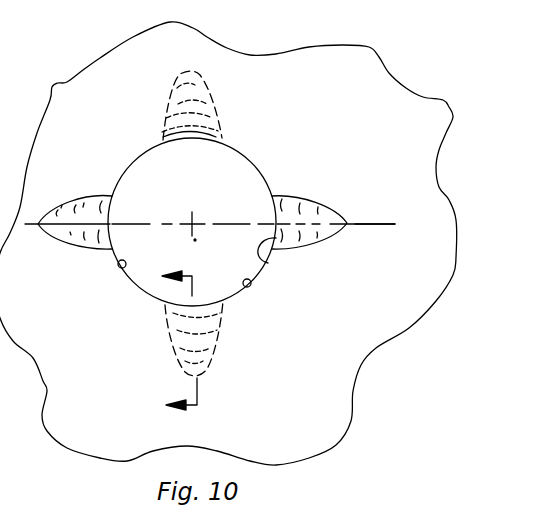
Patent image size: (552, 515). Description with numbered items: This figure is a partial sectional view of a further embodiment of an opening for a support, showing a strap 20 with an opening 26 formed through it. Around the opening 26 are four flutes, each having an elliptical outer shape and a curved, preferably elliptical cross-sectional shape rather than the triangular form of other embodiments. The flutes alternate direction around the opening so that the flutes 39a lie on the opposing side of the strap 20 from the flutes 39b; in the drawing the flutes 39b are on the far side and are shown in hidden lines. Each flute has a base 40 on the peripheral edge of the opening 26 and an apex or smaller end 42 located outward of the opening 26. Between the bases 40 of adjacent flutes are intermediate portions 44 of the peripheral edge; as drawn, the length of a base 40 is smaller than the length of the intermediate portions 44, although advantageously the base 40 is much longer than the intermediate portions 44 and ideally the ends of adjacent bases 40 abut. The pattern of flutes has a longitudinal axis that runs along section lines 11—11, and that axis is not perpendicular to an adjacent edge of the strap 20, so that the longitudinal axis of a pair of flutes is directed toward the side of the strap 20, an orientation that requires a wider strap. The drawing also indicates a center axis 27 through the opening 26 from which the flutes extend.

The strap 20 is at (283, 431).
The opening 26 is at (213, 179).
The axis 27 is at (361, 223).
The flutes 39a is at (301, 204).
The flutes 39b is at (212, 96).
The base 40 is at (270, 264).
The apex or smaller end 42 is at (348, 223).
The intermediate portions 44 is at (119, 268).
The section lines 11— 11 is at (171, 341).